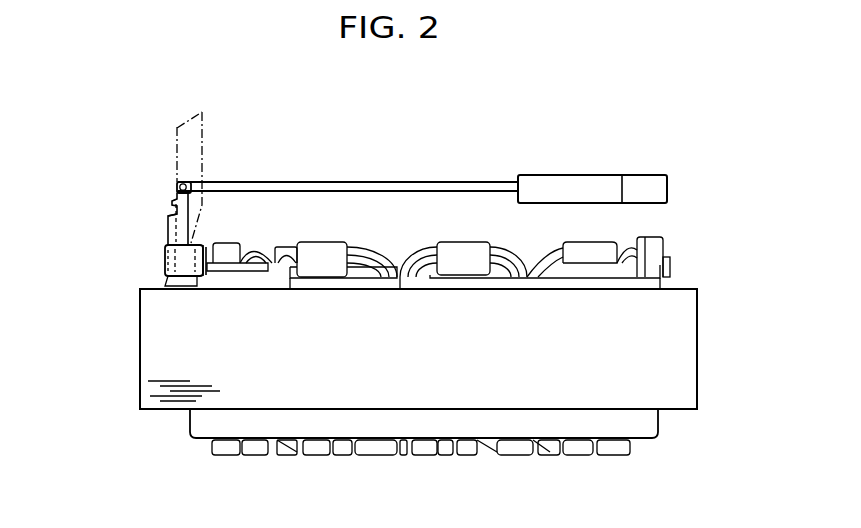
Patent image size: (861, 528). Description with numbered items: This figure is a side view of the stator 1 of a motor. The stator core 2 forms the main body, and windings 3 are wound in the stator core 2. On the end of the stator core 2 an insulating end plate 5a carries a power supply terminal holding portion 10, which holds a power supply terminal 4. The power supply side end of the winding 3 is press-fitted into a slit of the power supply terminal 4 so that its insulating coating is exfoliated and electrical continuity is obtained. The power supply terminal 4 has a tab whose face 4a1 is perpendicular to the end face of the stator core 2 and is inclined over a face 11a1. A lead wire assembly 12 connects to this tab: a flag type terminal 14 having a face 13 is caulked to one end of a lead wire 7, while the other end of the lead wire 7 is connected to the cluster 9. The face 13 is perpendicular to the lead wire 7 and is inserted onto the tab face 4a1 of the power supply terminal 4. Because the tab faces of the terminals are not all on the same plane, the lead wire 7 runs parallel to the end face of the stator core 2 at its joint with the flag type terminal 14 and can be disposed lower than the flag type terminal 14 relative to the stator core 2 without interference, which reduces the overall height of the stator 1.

The stator 1 is at (698, 387).
The stator core 2 is at (670, 327).
The windings 3 is at (378, 264).
The power supply terminal 4 is at (165, 263).
The face of the tab 4a1 is at (170, 222).
The insulating end plate 5a is at (183, 278).
The lead wire 7 is at (340, 187).
The cluster 9 is at (575, 186).
The power supply terminal holding portion 10 is at (167, 253).
The face 11a1 is at (175, 126).
The lead wire assembly 12 is at (396, 179).
The face of the flag type terminal 13 is at (200, 222).
The flag type terminal 14 is at (190, 212).